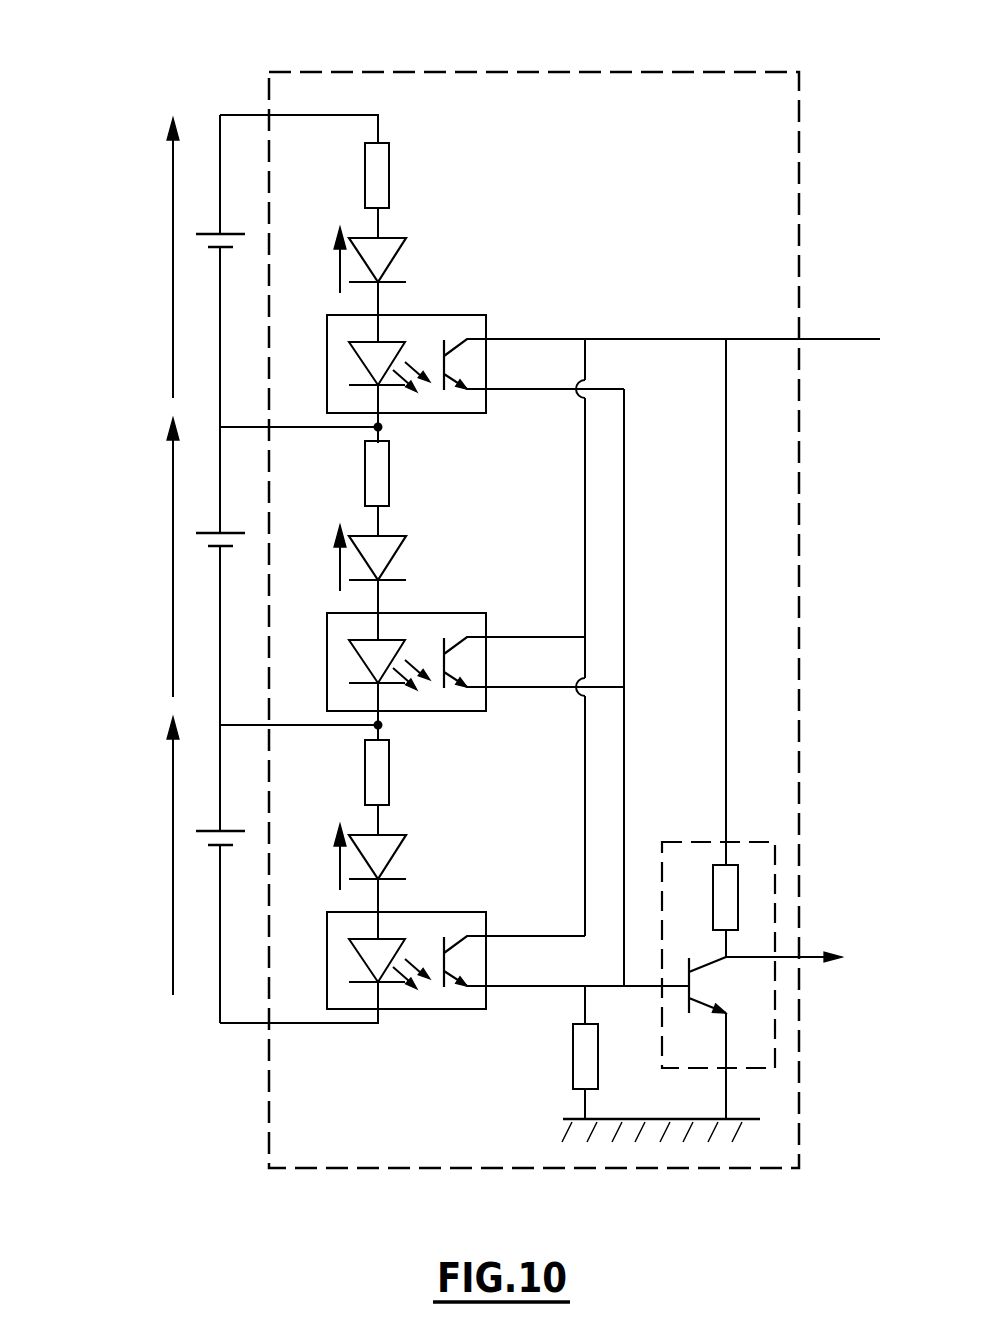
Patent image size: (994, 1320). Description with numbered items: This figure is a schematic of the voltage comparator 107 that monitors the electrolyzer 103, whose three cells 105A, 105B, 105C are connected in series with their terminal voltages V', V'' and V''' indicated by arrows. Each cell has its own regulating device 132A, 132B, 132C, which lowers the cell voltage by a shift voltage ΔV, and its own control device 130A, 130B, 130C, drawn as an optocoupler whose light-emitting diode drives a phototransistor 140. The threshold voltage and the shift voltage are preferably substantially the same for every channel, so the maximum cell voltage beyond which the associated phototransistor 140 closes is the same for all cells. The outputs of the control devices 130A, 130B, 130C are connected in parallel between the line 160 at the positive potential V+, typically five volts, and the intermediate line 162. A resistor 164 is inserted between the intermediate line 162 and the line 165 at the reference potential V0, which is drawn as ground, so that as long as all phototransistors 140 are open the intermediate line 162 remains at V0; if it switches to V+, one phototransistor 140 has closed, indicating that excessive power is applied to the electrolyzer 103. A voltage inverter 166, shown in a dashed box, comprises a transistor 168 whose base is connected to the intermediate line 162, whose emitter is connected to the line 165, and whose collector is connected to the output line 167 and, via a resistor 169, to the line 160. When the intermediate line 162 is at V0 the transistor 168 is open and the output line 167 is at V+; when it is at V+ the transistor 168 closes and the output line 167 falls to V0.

The electrolyzer 103 is at (200, 135).
The cell 105A is at (142, 215).
The cell 105B is at (150, 658).
The cell 105C is at (155, 808).
The voltage comparator 107 is at (577, 72).
The control device 130A is at (455, 305).
The control device 130B is at (455, 603).
The control device 130C is at (455, 902).
The regulating device 132A is at (410, 250).
The regulating device 132B is at (410, 548).
The regulating device 132C is at (410, 847).
The phototransistor 140 is at (452, 396).
The line 160 is at (632, 338).
The intermediate line 162 is at (650, 988).
The resistor 164 is at (570, 1042).
The line 165 is at (563, 1137).
The voltage inverter 166 is at (757, 833).
The output line 167 is at (817, 953).
The transistor 168 is at (735, 1002).
The resistor 169 is at (727, 895).